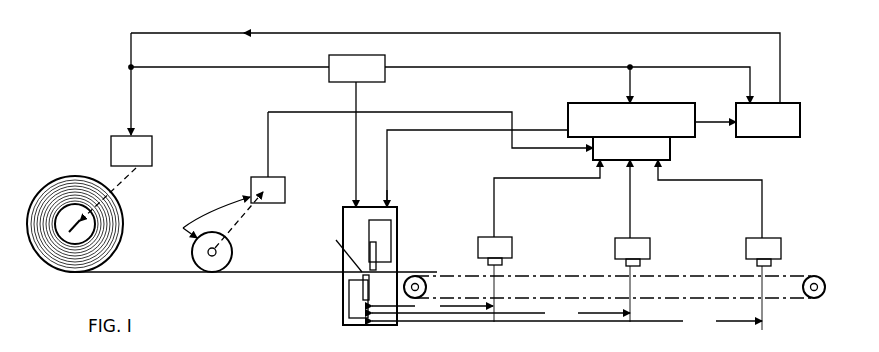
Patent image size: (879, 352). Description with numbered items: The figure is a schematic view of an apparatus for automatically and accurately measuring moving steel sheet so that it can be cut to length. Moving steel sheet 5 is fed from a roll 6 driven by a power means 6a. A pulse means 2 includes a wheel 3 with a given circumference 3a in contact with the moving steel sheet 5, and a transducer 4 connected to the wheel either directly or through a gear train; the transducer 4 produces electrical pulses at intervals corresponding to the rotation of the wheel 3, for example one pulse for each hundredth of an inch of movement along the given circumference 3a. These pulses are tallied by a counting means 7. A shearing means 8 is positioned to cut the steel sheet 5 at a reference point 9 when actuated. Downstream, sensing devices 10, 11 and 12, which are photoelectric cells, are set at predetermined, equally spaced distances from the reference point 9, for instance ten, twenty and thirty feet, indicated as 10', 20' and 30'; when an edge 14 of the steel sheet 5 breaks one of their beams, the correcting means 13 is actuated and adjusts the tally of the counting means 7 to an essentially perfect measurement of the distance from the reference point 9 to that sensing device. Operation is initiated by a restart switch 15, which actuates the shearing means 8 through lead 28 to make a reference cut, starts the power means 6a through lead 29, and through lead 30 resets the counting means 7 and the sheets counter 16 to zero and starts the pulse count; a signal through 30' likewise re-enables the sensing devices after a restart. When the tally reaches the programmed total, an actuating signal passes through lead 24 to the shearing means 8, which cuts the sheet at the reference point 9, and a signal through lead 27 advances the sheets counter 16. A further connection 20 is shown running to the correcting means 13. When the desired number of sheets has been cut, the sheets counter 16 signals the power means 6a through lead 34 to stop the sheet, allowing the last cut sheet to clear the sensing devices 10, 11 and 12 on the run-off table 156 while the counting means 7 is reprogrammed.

The pulse means 2 is at (206, 223).
The wheel 3 is at (226, 255).
The given circumference 3a is at (228, 242).
The transducer 4 is at (276, 188).
The moving steel sheet 5 is at (262, 273).
The roll 6 is at (120, 213).
The power means 6a is at (146, 144).
The counting means 7 is at (655, 118).
The shearing means 8 is at (398, 233).
The reference point 9 is at (336, 240).
The sensing device 10 is at (539, 241).
The sensing device 11 is at (638, 243).
The sensing device 12 is at (770, 243).
The correcting means 13 is at (660, 147).
The edge 14 is at (437, 272).
The restart switch 15 is at (370, 68).
The sheets counter 16 is at (758, 127).
The signal line 20 is at (430, 117).
The lead 24 is at (412, 130).
The lead 27 is at (718, 120).
The lead 28 is at (356, 146).
The lead 29 is at (232, 67).
The lead 30 is at (567, 72).
The lead 34 is at (580, 33).
The run-off table 156 is at (680, 277).
The distance to first sensor 10' is at (432, 306).
The distance to second sensor 20' is at (501, 312).
The lead 30' is at (567, 320).